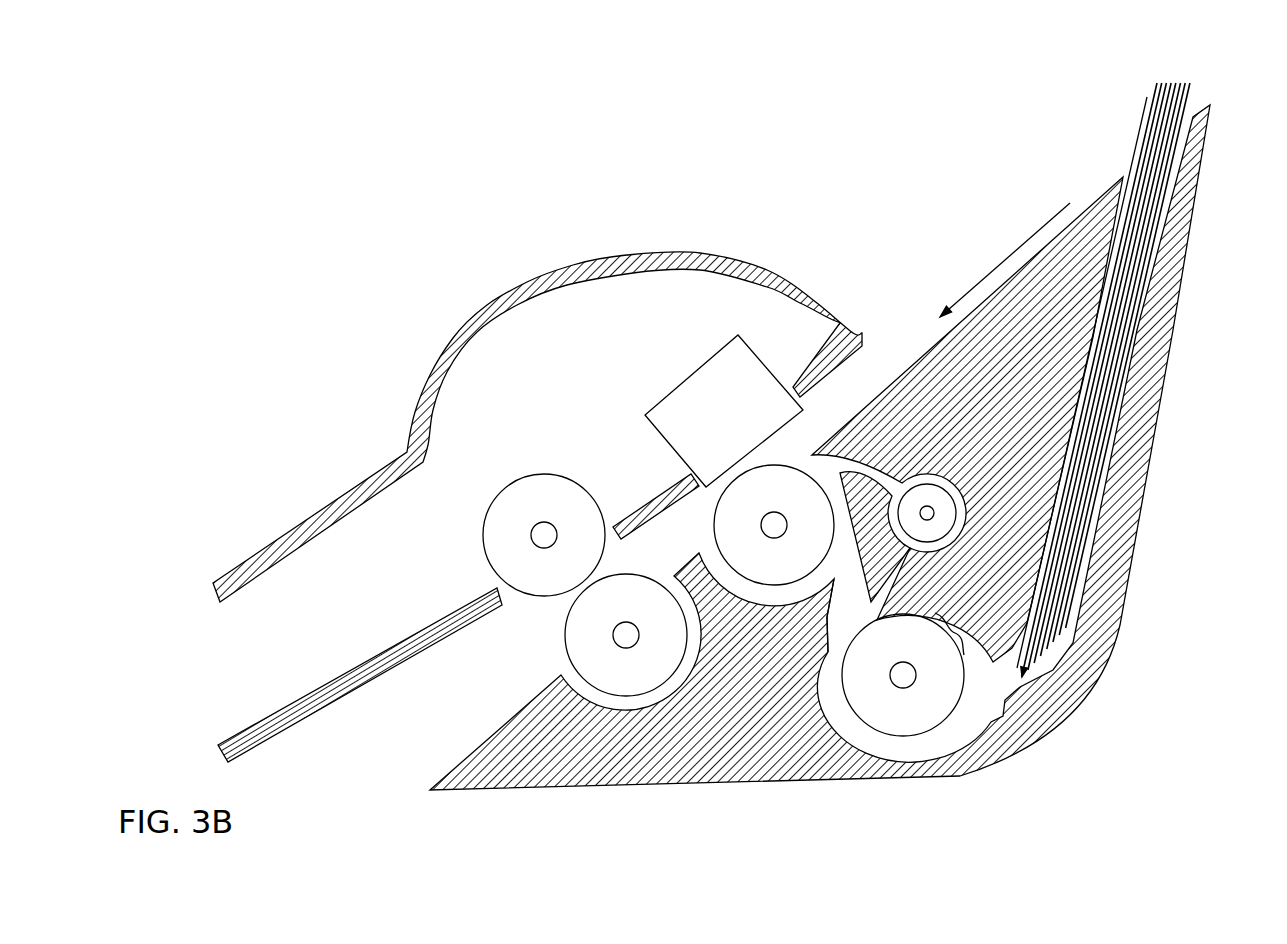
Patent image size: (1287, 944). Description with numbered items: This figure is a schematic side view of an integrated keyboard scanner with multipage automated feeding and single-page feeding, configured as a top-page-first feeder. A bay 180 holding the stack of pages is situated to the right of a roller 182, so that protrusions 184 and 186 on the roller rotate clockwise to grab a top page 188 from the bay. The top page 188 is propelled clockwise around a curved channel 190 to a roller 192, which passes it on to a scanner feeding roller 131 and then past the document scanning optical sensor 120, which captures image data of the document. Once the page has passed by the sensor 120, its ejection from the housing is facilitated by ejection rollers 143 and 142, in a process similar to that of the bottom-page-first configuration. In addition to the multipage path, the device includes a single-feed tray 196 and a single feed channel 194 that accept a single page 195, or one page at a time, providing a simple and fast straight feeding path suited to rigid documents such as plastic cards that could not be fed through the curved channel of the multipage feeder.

The document scanning optical sensor 120 is at (700, 390).
The scanner feeding roller 131 is at (717, 525).
The ejection roller 142 is at (577, 638).
The ejection roller 143 is at (542, 493).
The bay 180 is at (1115, 442).
The roller 182 is at (927, 717).
The protrusion 184 is at (932, 616).
The protrusion 186 is at (985, 700).
The top page 188 is at (1128, 170).
The channel 190 is at (847, 712).
The roller 192 is at (920, 473).
The single feed channel 194 is at (862, 330).
The single page 195 is at (1032, 240).
The single-feed tray 196 is at (1100, 200).